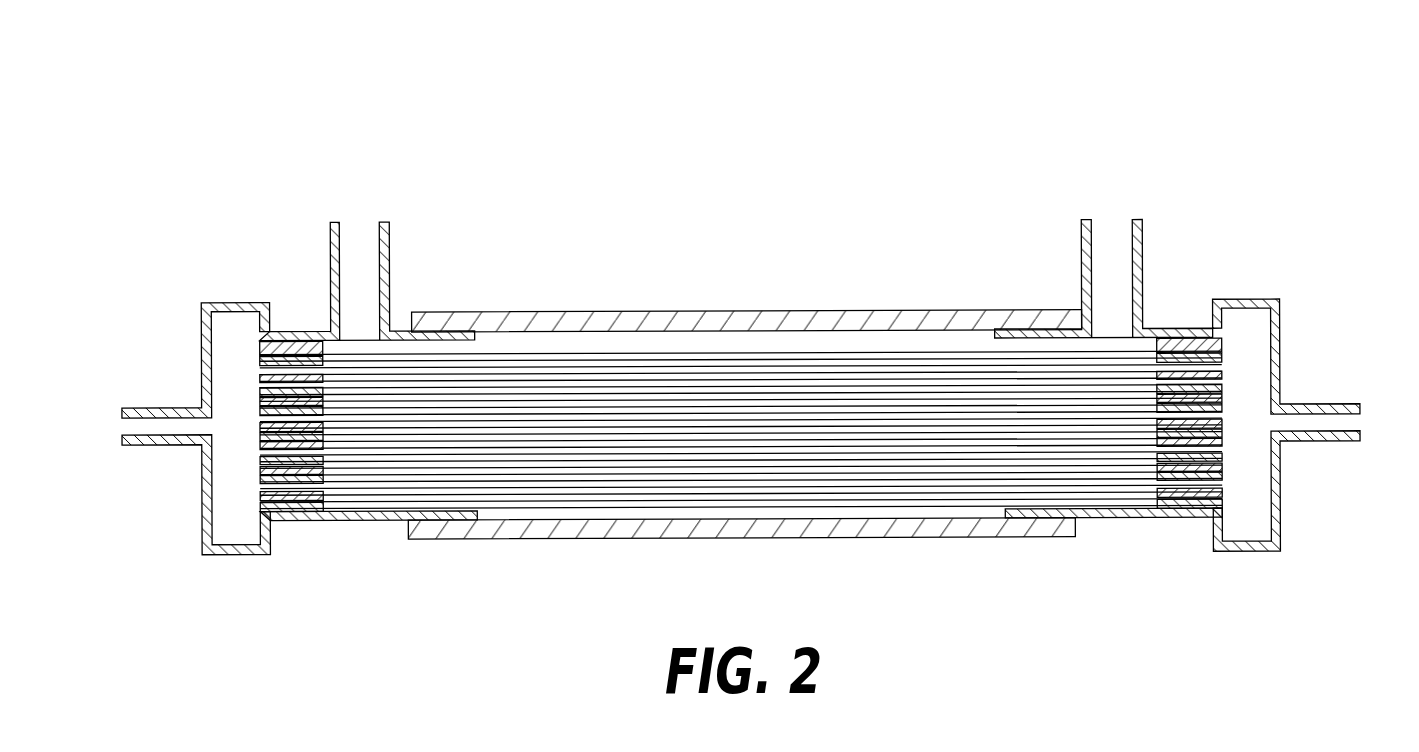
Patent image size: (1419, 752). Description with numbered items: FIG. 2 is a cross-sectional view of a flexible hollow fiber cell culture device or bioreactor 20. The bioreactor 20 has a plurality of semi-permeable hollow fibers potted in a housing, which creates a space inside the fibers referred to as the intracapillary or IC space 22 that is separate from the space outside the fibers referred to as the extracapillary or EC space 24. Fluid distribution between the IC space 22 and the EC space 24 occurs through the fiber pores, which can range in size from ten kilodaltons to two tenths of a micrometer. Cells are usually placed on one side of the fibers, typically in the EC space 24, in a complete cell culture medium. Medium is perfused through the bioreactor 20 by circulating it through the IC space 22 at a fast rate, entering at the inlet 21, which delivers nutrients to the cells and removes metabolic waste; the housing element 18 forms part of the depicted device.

The bioreactor 20 is at (703, 114).
The IC inlet 21 is at (1374, 415).
The IC space 22 is at (642, 462).
The EC space 24 is at (775, 336).
The housing shell 18 is at (773, 517).